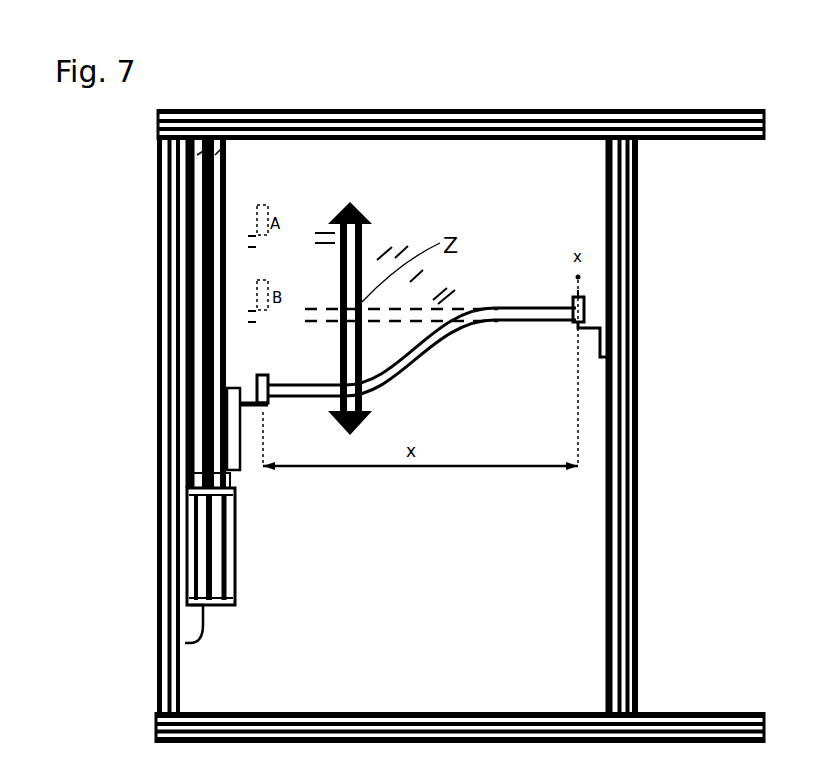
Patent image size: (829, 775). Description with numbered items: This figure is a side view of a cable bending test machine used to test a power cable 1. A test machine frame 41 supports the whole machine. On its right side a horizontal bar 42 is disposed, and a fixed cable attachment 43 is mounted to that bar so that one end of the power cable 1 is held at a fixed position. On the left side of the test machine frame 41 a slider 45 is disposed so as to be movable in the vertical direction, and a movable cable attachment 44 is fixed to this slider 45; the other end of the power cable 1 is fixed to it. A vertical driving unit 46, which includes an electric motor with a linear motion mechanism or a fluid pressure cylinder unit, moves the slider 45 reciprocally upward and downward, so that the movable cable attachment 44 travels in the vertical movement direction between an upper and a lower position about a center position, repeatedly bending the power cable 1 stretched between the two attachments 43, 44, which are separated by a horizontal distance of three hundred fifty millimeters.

The power cable 1 is at (425, 345).
The test machine frame 41 is at (626, 100).
The horizontal bar 42 is at (640, 341).
The fixed cable attachment 43 is at (584, 310).
The movable cable attachment 44 is at (246, 398).
The slider 45 is at (238, 472).
The vertical driving unit 46 is at (243, 563).